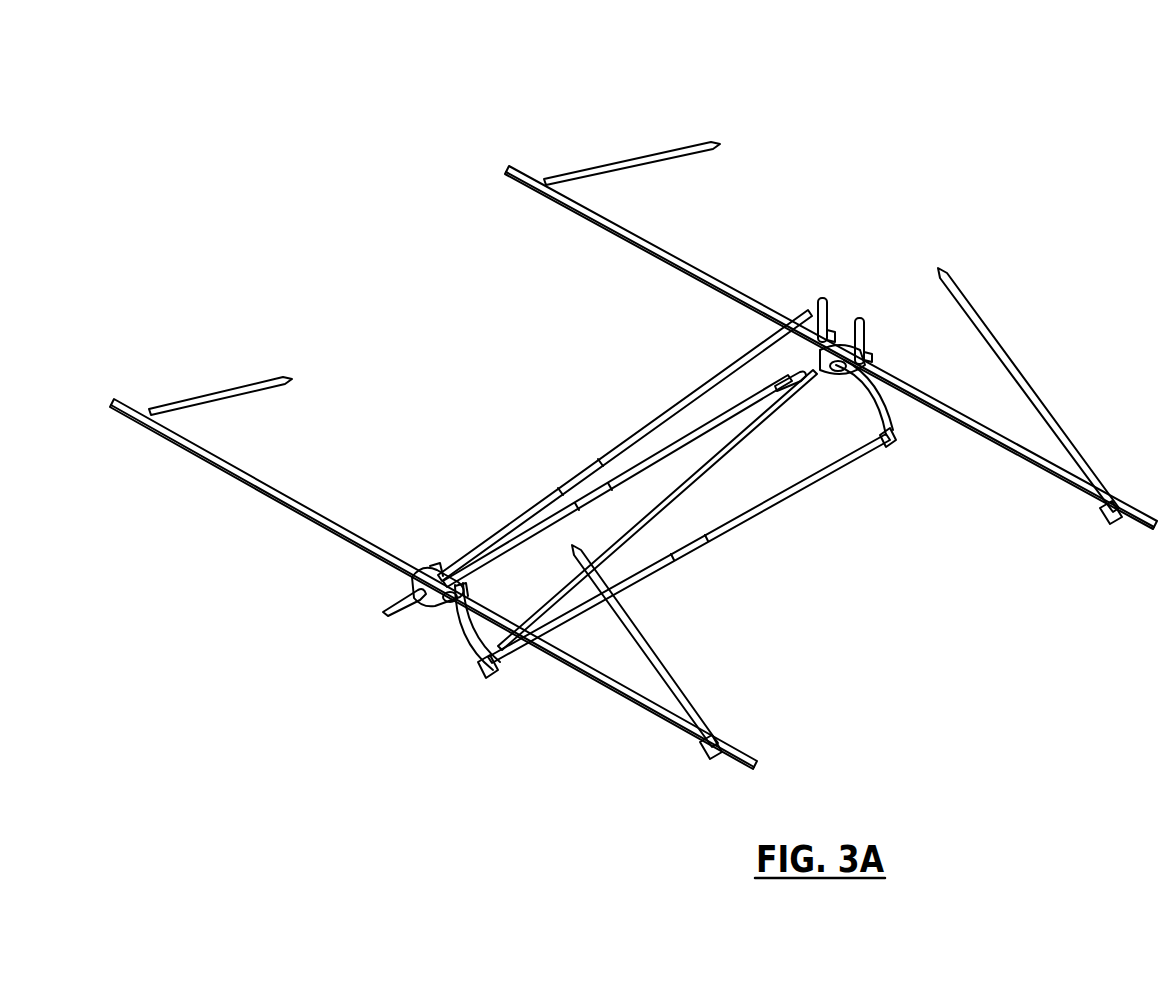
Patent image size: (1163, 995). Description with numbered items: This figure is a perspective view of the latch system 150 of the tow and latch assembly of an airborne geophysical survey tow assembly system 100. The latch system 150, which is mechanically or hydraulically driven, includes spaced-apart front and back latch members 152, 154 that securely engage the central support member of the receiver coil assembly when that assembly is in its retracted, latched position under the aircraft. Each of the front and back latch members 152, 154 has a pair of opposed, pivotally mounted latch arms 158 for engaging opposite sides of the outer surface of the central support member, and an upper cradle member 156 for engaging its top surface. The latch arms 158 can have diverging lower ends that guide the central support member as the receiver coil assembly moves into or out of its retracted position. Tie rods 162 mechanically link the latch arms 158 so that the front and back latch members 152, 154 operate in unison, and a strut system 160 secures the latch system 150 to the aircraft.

The cargo securing system 100 is at (1000, 112).
The latch system 150 is at (835, 603).
The front latch member 152 is at (443, 566).
The back latch member 154 is at (835, 332).
The upper cradle member 156 is at (432, 606).
The latch arm 158 is at (398, 622).
The strut system 160 is at (622, 684).
The tie rod 162 is at (633, 463).